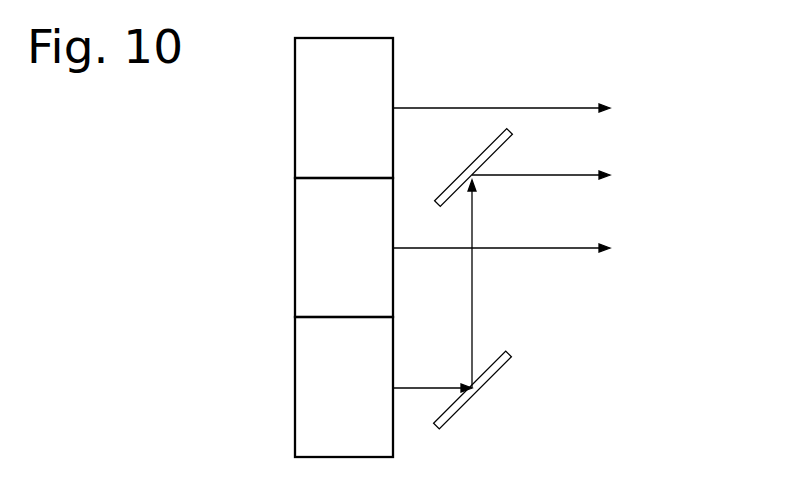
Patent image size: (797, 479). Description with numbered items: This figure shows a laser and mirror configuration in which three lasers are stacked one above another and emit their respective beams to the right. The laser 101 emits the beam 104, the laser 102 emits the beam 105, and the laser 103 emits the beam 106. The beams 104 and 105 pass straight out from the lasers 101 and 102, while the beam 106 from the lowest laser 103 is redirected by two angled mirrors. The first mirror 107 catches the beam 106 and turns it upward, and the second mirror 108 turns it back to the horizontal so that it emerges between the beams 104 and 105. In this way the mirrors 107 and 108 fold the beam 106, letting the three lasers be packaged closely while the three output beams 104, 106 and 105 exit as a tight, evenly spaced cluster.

The laser 101 is at (310, 82).
The laser 102 is at (308, 228).
The laser 103 is at (310, 372).
The beam 104 is at (582, 108).
The beam 105 is at (580, 248).
The beam 106 is at (440, 388).
The mirror 107 is at (478, 161).
The mirror 108 is at (582, 175).